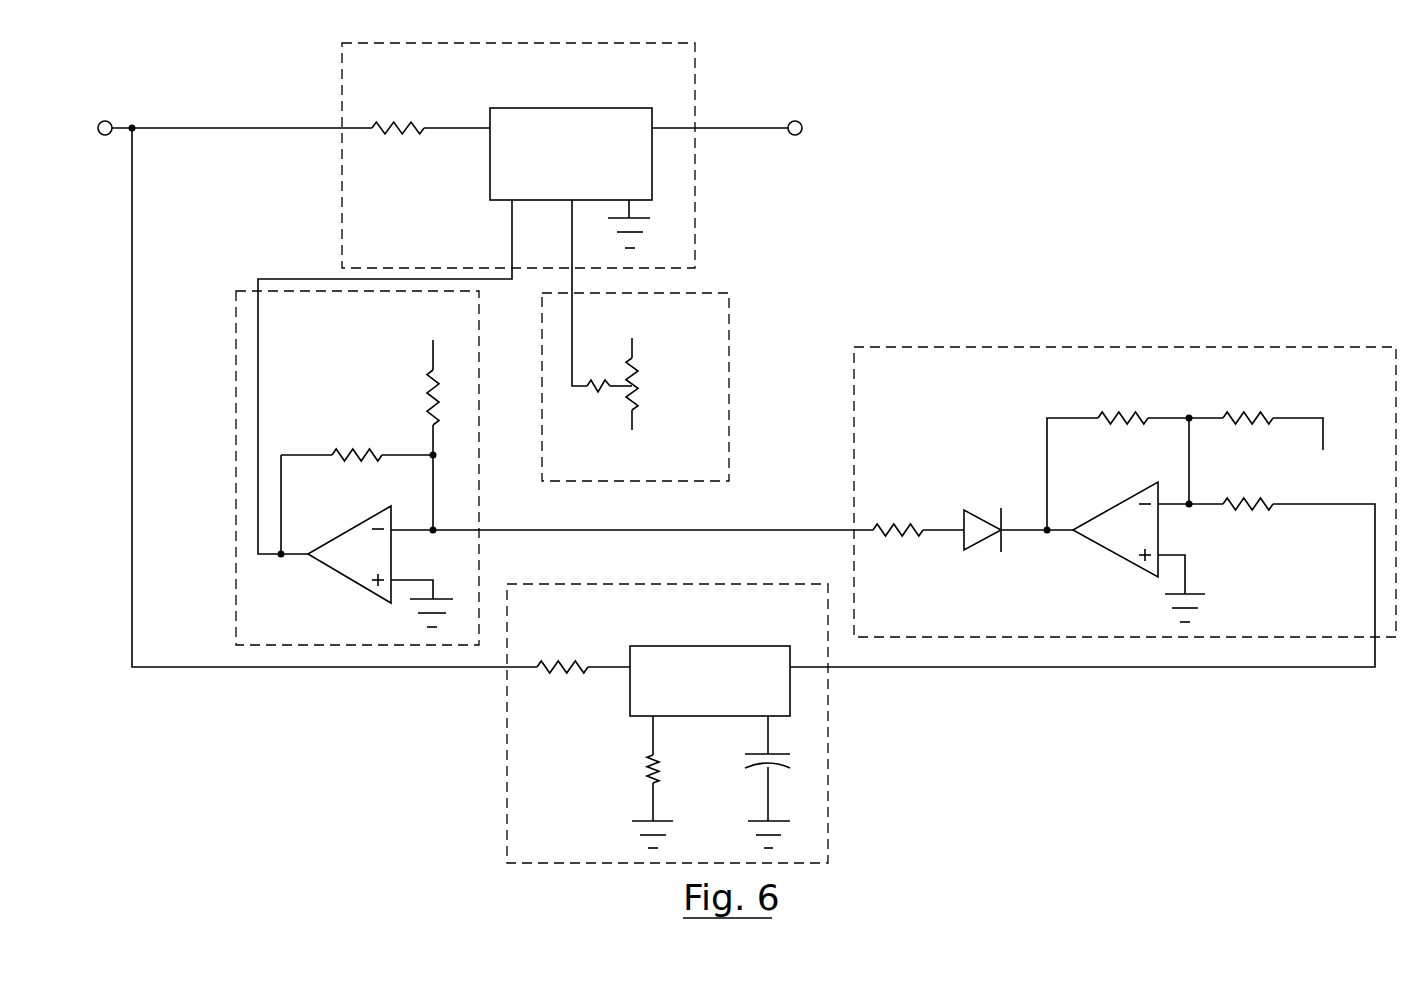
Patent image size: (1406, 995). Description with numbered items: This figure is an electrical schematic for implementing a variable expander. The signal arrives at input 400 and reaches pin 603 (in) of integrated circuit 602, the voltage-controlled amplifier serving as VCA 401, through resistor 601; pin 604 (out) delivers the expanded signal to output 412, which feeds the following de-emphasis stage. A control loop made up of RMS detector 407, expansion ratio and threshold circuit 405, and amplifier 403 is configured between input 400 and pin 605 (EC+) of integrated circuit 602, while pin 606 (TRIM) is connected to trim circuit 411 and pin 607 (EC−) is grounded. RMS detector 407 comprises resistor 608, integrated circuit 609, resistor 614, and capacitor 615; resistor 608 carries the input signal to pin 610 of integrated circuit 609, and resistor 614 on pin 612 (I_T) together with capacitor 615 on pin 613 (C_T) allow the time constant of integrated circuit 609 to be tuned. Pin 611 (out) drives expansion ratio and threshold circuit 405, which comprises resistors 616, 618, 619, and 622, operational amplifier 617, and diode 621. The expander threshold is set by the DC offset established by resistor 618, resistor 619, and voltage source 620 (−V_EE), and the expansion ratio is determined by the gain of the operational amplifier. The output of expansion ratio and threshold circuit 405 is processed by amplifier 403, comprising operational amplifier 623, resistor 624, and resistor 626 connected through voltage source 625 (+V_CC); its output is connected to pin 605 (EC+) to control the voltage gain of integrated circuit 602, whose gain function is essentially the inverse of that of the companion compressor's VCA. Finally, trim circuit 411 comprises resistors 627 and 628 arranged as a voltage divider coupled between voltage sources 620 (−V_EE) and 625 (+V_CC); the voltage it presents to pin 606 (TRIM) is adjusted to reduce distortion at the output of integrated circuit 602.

The input 400 is at (105, 121).
The VCA 401 is at (705, 66).
The amplifier 403 is at (226, 315).
The expansion ratio and threshold circuit 405 is at (843, 372).
The RMS detector 407 is at (496, 748).
The trim circuit 411 is at (742, 314).
The output 412 is at (795, 121).
The resistor 601 is at (397, 122).
The integrated circuit 602 is at (570, 108).
The pin (in) 603 is at (506, 108).
The pin (out) 604 is at (637, 108).
The pin (EC+) 605 is at (505, 200).
The pin (TRIM) 606 is at (565, 200).
The pin (EC−) 607 is at (611, 185).
The resistor 608 is at (560, 661).
The integrated circuit 609 is at (722, 646).
The timer input pin 610 is at (645, 646).
The pin (out) 611 is at (770, 646).
The pin (I_T) 612 is at (640, 716).
The pin (C_T) 613 is at (755, 716).
The resistor 614 is at (648, 775).
The capacitor 615 is at (788, 770).
The resistor 616 is at (1250, 508).
The operational amplifier 617 is at (1113, 505).
The resistor 618 is at (1118, 412).
The resistor 619 is at (1243, 412).
The voltage source (−V_EE) 620 is at (650, 467).
The diode 621 is at (965, 510).
The resistor 622 is at (900, 537).
The operational amplifier 623 is at (350, 530).
The resistor 624 is at (350, 449).
The voltage source (+V_CC) 625 is at (405, 323).
The resistor 626 is at (428, 395).
The resistor 627 is at (640, 386).
The resistor 628 is at (600, 392).